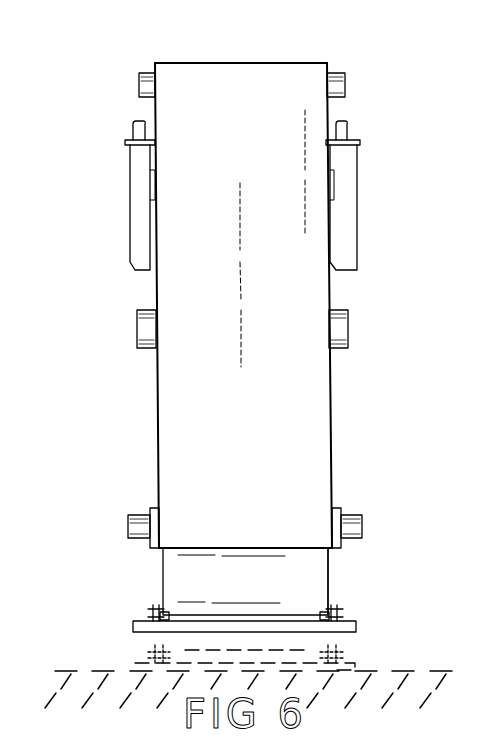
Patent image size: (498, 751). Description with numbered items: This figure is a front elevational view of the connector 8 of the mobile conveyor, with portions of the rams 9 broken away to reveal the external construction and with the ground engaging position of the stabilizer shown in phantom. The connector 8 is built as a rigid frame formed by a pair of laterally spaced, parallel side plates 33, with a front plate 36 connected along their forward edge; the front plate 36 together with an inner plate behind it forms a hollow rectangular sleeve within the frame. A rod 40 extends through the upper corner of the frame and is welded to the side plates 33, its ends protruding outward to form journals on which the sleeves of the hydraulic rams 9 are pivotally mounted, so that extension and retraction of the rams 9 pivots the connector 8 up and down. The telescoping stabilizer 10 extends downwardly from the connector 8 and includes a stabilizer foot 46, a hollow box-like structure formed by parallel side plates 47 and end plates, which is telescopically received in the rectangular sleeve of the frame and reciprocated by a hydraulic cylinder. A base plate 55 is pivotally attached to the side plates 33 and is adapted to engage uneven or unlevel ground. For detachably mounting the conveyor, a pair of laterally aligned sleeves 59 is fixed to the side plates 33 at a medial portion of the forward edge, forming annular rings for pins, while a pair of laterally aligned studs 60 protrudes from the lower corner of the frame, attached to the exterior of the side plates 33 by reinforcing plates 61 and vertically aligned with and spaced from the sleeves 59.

The connector 8 is at (186, 60).
The rams 9 is at (140, 191).
The telescoping stabilizer 10 is at (336, 574).
The side plates 33 is at (157, 403).
The front plate 36 is at (263, 393).
The rod 40 is at (150, 79).
The stabilizer foot 46 is at (162, 580).
The side plates of stabilizer foot 47 is at (234, 591).
The base plate 55 is at (355, 627).
The sleeves 59 is at (140, 321).
The studs 60 is at (132, 517).
The reinforcing plates 61 is at (341, 511).